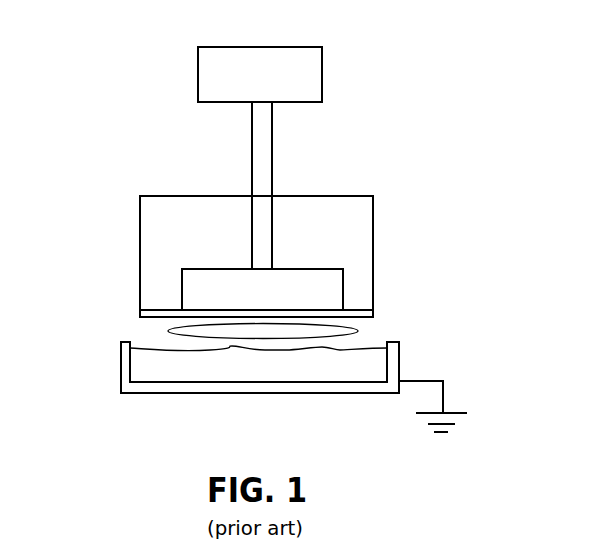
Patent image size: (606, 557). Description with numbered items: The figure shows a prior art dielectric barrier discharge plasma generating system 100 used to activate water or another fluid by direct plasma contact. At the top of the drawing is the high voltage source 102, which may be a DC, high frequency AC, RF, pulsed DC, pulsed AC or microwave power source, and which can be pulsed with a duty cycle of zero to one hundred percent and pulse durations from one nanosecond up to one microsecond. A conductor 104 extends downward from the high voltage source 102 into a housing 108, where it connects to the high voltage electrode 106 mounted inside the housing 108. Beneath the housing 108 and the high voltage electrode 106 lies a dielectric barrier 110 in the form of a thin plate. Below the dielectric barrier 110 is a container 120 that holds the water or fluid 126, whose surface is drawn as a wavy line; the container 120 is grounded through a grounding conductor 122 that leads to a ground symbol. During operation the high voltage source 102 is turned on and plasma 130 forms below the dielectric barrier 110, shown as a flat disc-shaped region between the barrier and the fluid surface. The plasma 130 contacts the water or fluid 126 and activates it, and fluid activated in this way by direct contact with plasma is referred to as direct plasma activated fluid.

The dielectric barrier discharge plasma generating system 100 is at (484, 148).
The high voltage source 102 is at (322, 47).
The conductor 104 is at (273, 150).
The high voltage electrode 106 is at (343, 282).
The housing 108 is at (373, 229).
The dielectric barrier 110 is at (140, 313).
The container 120 is at (399, 352).
The grounding conductor 122 is at (443, 399).
The water or fluid 126 is at (253, 358).
The plasma 130 is at (168, 331).